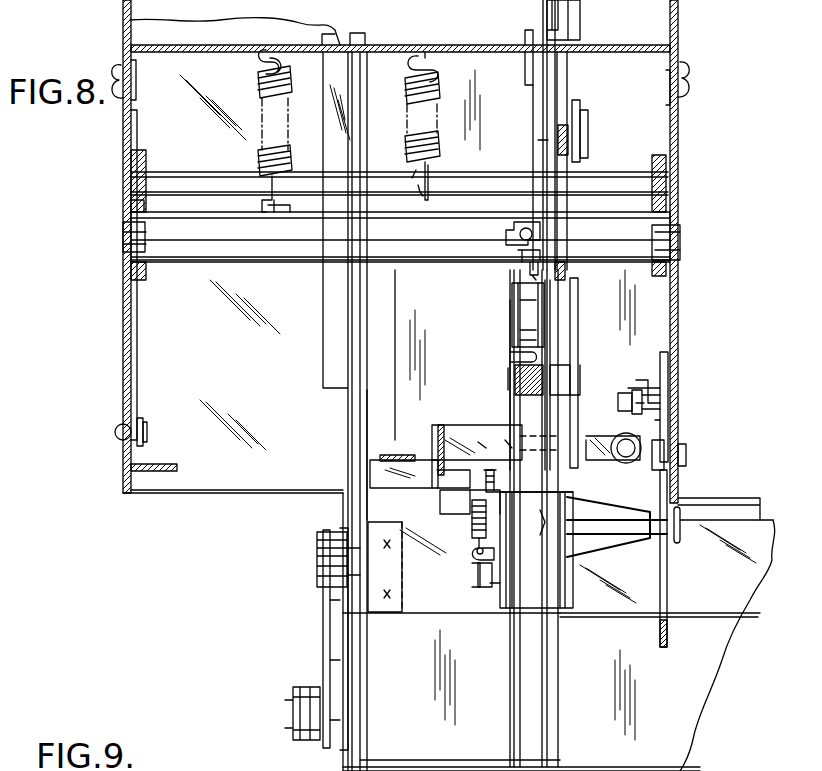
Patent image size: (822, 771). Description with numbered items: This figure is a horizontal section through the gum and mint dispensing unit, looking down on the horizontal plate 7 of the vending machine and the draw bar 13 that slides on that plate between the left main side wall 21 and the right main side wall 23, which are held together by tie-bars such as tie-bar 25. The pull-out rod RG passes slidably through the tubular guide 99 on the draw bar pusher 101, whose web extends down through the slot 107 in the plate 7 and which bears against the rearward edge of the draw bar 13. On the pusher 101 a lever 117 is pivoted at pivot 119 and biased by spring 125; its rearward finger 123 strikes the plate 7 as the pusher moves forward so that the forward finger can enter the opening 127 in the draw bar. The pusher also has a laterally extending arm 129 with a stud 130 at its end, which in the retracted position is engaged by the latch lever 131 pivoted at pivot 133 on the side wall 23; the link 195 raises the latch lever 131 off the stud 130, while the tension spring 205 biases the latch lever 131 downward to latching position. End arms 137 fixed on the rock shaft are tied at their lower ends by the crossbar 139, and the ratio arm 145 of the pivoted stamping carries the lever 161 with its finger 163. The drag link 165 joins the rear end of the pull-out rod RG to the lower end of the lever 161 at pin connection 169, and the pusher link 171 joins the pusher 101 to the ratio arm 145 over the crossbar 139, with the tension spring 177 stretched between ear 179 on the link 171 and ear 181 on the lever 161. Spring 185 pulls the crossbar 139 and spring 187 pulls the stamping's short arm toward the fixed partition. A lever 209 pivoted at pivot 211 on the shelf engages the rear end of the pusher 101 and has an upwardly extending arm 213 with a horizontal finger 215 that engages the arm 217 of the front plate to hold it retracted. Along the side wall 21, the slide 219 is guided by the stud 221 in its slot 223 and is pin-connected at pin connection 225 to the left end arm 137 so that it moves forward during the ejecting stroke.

The tie-bar 25 is at (330, 42).
The spring 187 is at (258, 86).
The spring 185 is at (406, 142).
The pin connection 169 is at (530, 40).
The finger 163 is at (572, 20).
The drag link 165 is at (536, 102).
The lever 161 is at (545, 125).
The ratio arm 145 is at (566, 137).
The end arm 137 is at (147, 157).
The crossbar 139 is at (204, 178).
The pin connection 225 is at (134, 196).
The ear 181 is at (512, 232).
The tension spring 177 is at (530, 268).
The pusher link 171 is at (577, 308).
The right main side wall 23 is at (678, 324).
The slot 107 is at (464, 344).
The left main side wall 21 is at (123, 376).
The slot 223 is at (131, 404).
The stud 221 is at (115, 432).
The slide 219 is at (138, 472).
The arm 213 is at (445, 424).
The lever 209 is at (462, 428).
The arm 217 is at (399, 454).
The draw bar pusher 101 is at (512, 446).
The rearward finger 123 is at (486, 473).
The finger 215 is at (392, 482).
The pivot 119 is at (440, 503).
The spring 125 is at (470, 526).
The opening 127 is at (478, 580).
The lever 117 is at (490, 590).
The tubular guide 99 is at (549, 594).
The arm 129 is at (602, 546).
The stud 130 is at (678, 541).
The latch lever 131 is at (667, 578).
The draw bar 13 is at (689, 620).
The horizontal plate 7 is at (414, 680).
The pull-out rod RG is at (518, 722).
The link 195 is at (645, 380).
The tension spring 205 is at (629, 392).
The pivot 211 is at (650, 438).
The pivot 133 is at (686, 459).
The ear 179 is at (515, 378).